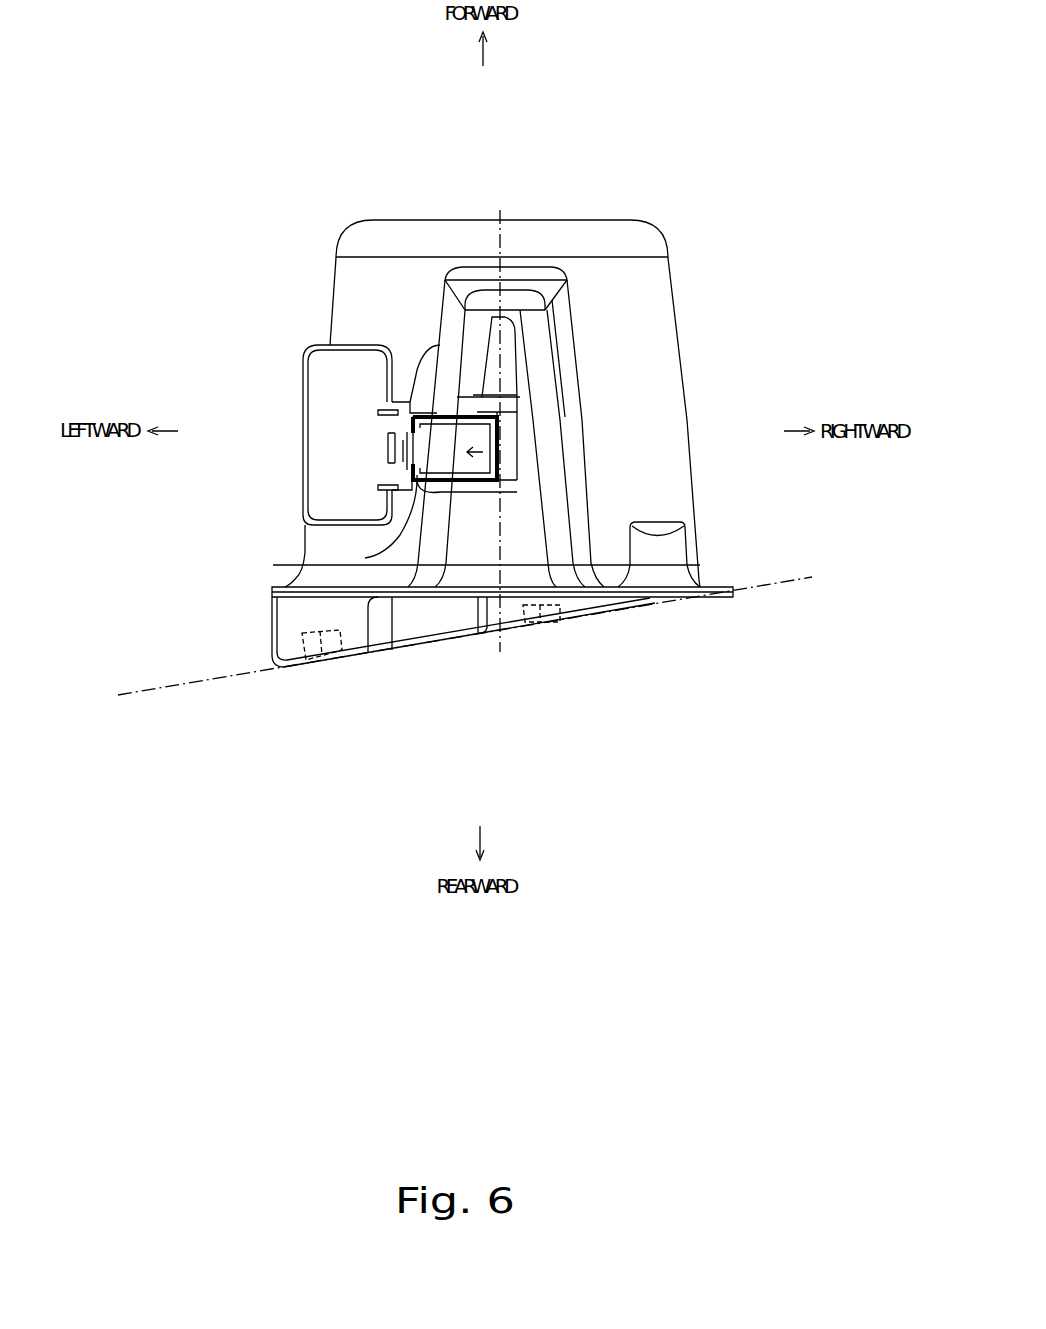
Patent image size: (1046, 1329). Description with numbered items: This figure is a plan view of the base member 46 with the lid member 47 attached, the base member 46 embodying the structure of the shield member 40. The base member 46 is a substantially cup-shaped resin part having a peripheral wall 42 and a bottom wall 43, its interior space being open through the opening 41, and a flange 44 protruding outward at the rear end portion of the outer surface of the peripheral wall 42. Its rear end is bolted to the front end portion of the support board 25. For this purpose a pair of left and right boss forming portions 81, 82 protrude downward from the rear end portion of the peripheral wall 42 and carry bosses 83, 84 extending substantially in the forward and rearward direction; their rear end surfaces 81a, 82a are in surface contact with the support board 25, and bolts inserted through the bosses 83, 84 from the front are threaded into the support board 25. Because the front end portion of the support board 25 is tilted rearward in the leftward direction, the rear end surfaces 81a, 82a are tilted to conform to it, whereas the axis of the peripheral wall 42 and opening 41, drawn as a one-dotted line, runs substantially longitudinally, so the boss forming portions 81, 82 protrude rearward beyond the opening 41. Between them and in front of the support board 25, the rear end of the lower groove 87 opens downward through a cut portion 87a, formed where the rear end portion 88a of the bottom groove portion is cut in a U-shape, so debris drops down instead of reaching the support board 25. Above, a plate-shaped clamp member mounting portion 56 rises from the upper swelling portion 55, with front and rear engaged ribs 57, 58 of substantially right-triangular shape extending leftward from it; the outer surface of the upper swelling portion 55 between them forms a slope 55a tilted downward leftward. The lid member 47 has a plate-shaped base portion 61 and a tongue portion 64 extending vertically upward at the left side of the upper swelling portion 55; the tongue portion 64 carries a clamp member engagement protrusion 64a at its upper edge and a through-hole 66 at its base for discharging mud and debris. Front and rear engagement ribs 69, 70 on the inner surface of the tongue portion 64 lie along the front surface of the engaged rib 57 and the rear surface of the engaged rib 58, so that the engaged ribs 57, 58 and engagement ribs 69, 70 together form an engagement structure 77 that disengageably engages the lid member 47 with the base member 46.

The support board 25 is at (185, 700).
The shield member 40 is at (690, 274).
The opening 41 is at (713, 597).
The peripheral wall 42 is at (643, 307).
The bottom wall 43 is at (597, 227).
The flange 44 is at (723, 587).
The base member 46 is at (390, 228).
The lid member 47 is at (307, 532).
The upper swelling portion 55 is at (547, 393).
The slope 55a is at (540, 492).
The clamp member mounting portion 56 is at (510, 440).
The front engaged rib 57 is at (470, 395).
The rear engaged rib 58 is at (497, 485).
The base portion 61 is at (318, 392).
The tongue portion 64 is at (413, 470).
The clamp member engagement protrusion 64a is at (405, 434).
The through-hole 66 is at (384, 447).
The front engagement rib 69 is at (417, 400).
The rear engagement rib 70 is at (365, 558).
The engagement structure 77 is at (475, 480).
The left boss forming portion 81 is at (290, 623).
The rear end surface 81a is at (358, 660).
The right boss forming portion 82 is at (527, 615).
The rear end surface 82a is at (510, 617).
The boss 83 is at (298, 650).
The boss 84 is at (567, 607).
The lower groove 87 is at (458, 597).
The cut portion 87a is at (435, 635).
The rear end portion of the bottom groove portion 88a is at (398, 624).